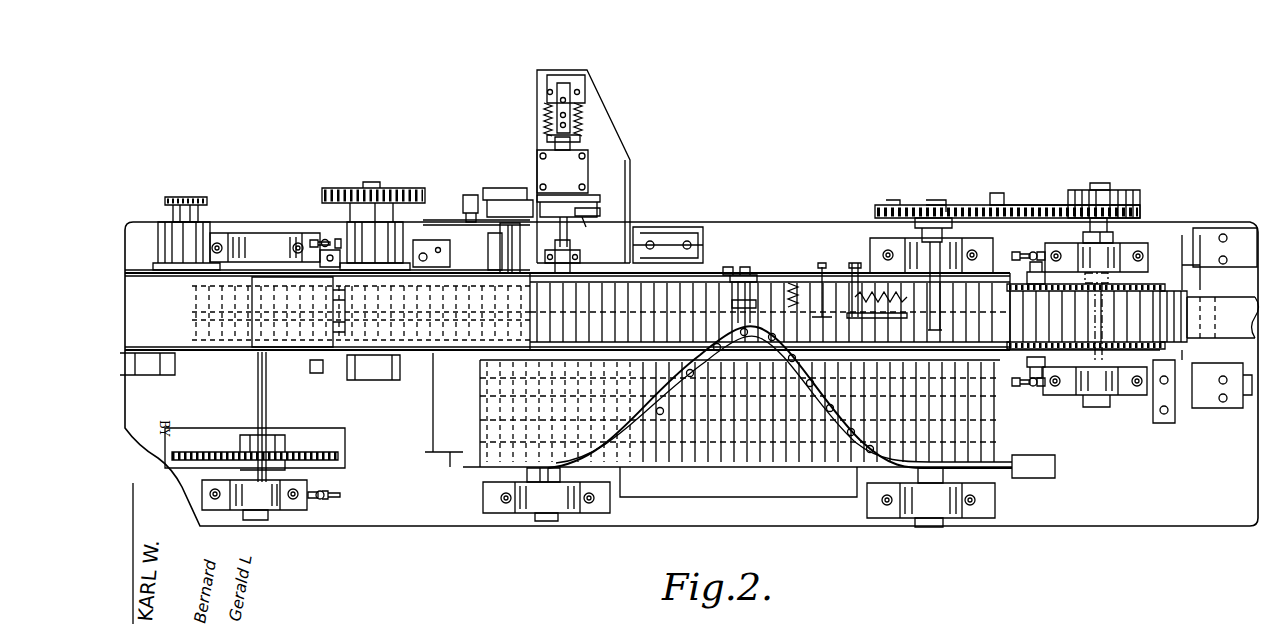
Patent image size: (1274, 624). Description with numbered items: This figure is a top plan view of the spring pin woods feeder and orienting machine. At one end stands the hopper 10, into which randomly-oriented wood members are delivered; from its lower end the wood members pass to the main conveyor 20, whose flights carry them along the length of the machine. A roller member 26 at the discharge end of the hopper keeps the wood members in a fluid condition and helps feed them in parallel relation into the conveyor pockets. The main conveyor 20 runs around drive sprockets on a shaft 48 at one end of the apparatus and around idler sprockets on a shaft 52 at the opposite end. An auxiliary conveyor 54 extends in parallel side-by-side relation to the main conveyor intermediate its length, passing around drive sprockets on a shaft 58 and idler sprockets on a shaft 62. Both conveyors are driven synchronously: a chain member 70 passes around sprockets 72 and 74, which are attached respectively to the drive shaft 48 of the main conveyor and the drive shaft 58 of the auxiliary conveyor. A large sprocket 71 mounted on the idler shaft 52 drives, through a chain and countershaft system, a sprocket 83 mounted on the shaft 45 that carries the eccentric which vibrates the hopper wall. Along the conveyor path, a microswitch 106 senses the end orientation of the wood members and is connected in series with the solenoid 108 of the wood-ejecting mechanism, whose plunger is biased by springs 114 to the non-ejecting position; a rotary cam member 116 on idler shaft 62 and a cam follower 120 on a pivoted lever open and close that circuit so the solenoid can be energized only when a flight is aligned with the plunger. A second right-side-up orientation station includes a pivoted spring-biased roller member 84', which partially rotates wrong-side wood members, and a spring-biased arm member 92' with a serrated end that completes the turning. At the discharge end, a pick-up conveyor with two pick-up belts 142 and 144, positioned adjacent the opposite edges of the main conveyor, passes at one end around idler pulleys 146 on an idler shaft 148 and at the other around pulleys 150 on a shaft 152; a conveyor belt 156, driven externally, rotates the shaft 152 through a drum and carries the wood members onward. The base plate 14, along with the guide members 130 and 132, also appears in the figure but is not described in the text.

The hopper 10 is at (235, 272).
The base plate 14 is at (1079, 377).
The main conveyor 20 is at (699, 292).
The roller member 26 is at (372, 182).
The shaft 45 is at (185, 196).
The shaft 48 is at (1100, 193).
The shaft 52 is at (262, 398).
The auxiliary conveyor 54 is at (958, 439).
The shaft 58 is at (935, 528).
The shaft 62 is at (548, 522).
The chain member 70 is at (1012, 212).
The large sprocket 71 is at (333, 453).
The sprocket 72 is at (1137, 210).
The sprocket 74 is at (901, 211).
The sprocket 83 is at (237, 220).
The pivoted spring-biased roller member 84' is at (777, 289).
The spring-biased arm member 92' is at (873, 282).
The microswitch 106 is at (470, 195).
The solenoid 108 is at (578, 167).
The springs 114 is at (546, 118).
The rotary cam member 116 is at (598, 213).
The cam follower 120 is at (583, 219).
The chain guide 130 is at (663, 412).
The guide rollers 132 is at (684, 404).
The pick-up belt 142 is at (1148, 287).
The pick-up belt 144 is at (1165, 339).
The idler pulleys 146 is at (1013, 282).
The idler shaft 148 is at (1033, 387).
The pulleys 150 is at (1224, 307).
The shaft 152 is at (1177, 314).
The conveyor belt 156 is at (1256, 326).